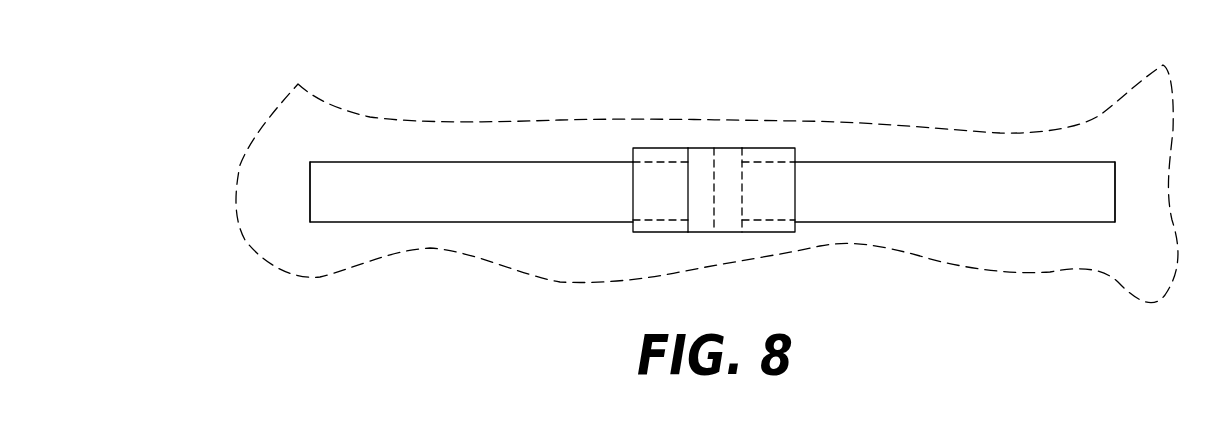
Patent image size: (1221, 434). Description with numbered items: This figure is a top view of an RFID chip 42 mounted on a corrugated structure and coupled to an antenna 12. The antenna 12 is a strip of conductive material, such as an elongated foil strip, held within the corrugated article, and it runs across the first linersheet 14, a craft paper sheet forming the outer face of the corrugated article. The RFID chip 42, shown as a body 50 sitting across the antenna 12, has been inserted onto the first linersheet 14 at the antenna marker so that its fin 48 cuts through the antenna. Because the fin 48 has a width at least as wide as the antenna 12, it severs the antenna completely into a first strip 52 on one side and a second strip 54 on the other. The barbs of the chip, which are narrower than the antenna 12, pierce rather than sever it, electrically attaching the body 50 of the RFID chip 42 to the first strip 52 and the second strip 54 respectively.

The antenna 12 is at (908, 178).
The first linersheet 14 is at (1003, 147).
The RFID chip 42 is at (765, 153).
The fin 48 is at (713, 152).
The body 50 is at (657, 170).
The first strip 52 is at (447, 207).
The second strip 54 is at (1102, 186).